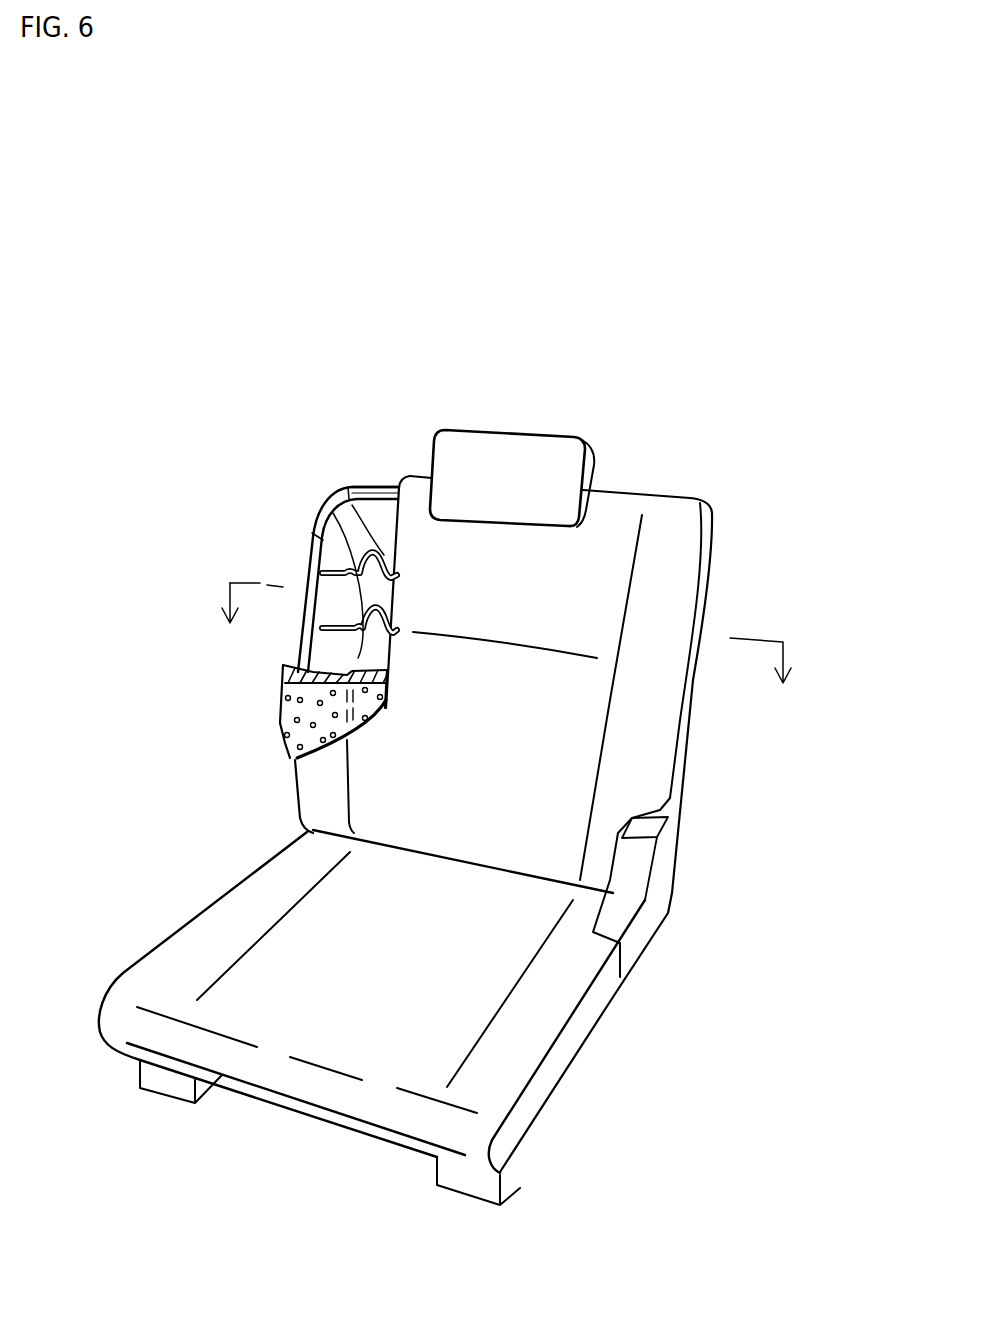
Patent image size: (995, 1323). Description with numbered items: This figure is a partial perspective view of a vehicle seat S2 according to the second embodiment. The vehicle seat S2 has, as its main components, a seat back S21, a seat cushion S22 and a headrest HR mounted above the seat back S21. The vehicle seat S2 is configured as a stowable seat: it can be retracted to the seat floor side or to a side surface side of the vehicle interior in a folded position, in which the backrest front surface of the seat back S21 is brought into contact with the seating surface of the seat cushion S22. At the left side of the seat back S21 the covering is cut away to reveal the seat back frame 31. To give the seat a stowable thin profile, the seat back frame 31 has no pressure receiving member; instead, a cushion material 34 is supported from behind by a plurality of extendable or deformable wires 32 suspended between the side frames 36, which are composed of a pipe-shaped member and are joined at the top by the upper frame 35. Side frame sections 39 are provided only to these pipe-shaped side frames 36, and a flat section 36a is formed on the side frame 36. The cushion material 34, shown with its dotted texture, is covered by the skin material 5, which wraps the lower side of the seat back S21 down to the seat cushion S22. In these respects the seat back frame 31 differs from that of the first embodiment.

The vehicle seat S2 is at (236, 283).
The headrest HR is at (550, 447).
The seat back S21 is at (557, 763).
The seat cushion S22 is at (470, 993).
The seat back frame 31 is at (153, 414).
The wire 32 is at (366, 503).
The upper frame 35 is at (385, 495).
The side frame 36 is at (307, 552).
The side frame section 39 is at (289, 560).
The flat section 36a is at (300, 587).
The cushion material 34 is at (300, 706).
The skin material 5 is at (290, 757).